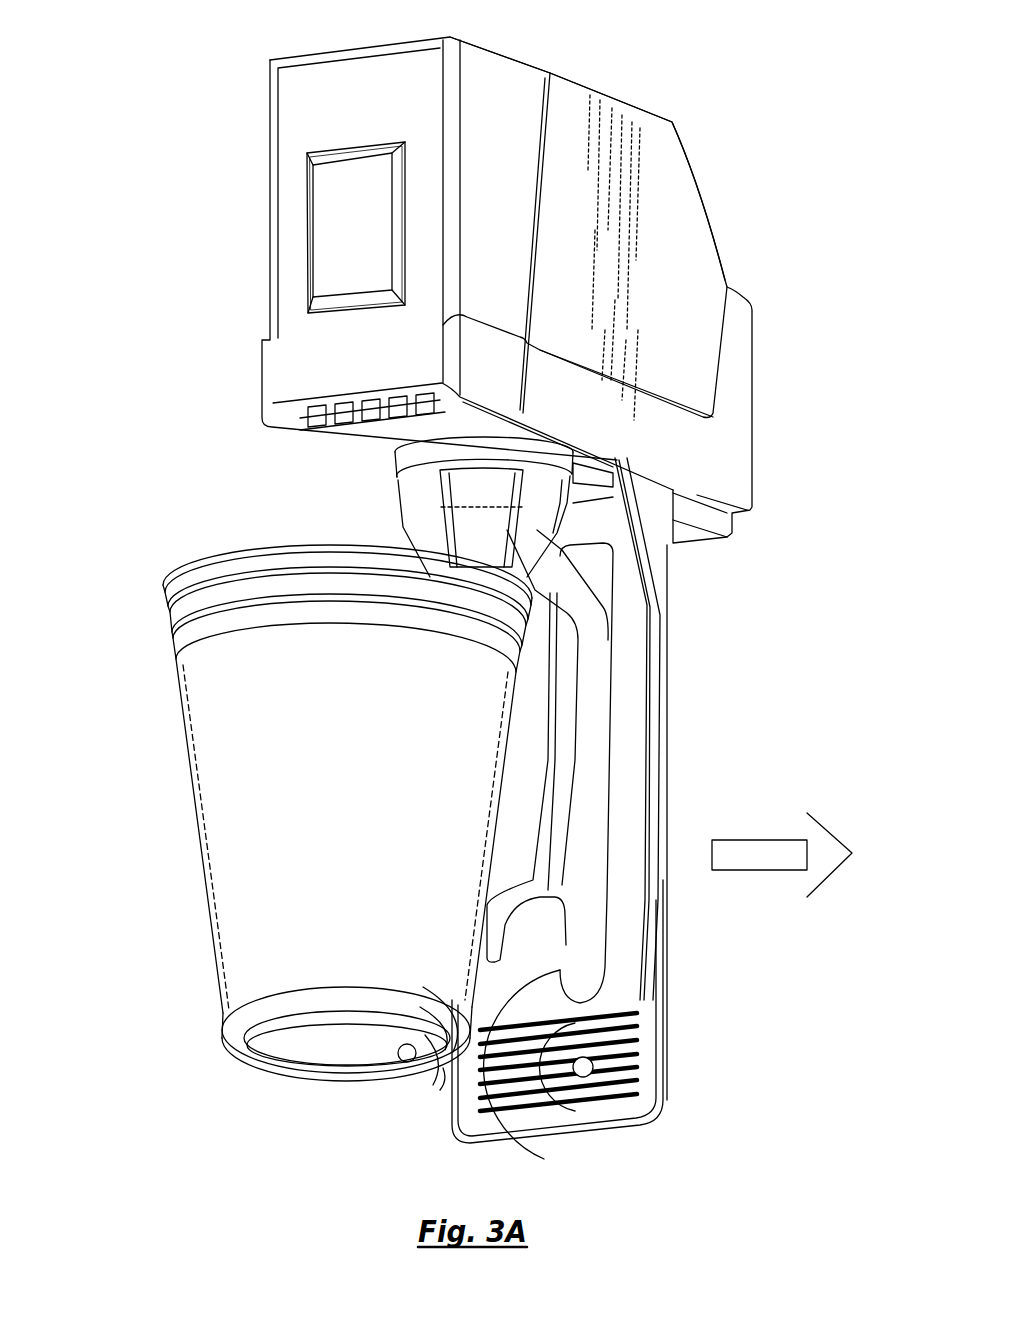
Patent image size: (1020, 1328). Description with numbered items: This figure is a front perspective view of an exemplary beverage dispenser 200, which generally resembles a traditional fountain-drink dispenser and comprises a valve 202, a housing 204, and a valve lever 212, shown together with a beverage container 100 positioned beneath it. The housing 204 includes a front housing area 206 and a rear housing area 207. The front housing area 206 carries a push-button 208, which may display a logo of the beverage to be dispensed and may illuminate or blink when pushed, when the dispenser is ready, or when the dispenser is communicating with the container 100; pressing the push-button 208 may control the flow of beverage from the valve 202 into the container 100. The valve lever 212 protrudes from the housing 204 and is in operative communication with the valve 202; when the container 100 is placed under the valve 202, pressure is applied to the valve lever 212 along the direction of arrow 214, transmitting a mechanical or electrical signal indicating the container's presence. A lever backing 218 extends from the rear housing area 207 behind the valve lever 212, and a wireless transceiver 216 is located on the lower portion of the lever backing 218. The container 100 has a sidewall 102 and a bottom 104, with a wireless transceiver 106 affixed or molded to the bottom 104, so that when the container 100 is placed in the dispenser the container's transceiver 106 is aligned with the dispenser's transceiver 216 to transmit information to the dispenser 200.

The beverage container 100 is at (289, 860).
The sidewall 102 is at (232, 838).
The bottom 104 is at (245, 1043).
The wireless transceiver 106 is at (352, 1043).
The beverage dispenser 200 is at (488, 587).
The valve 202 is at (490, 503).
The housing 204 is at (645, 170).
The front housing area 206 is at (505, 82).
The rear housing area 207 is at (678, 357).
The push-button 208 is at (368, 253).
The valve lever 212 is at (540, 873).
The arrow 214 is at (782, 855).
The wireless transceiver 216 is at (592, 1050).
The lever backing 218 is at (625, 718).